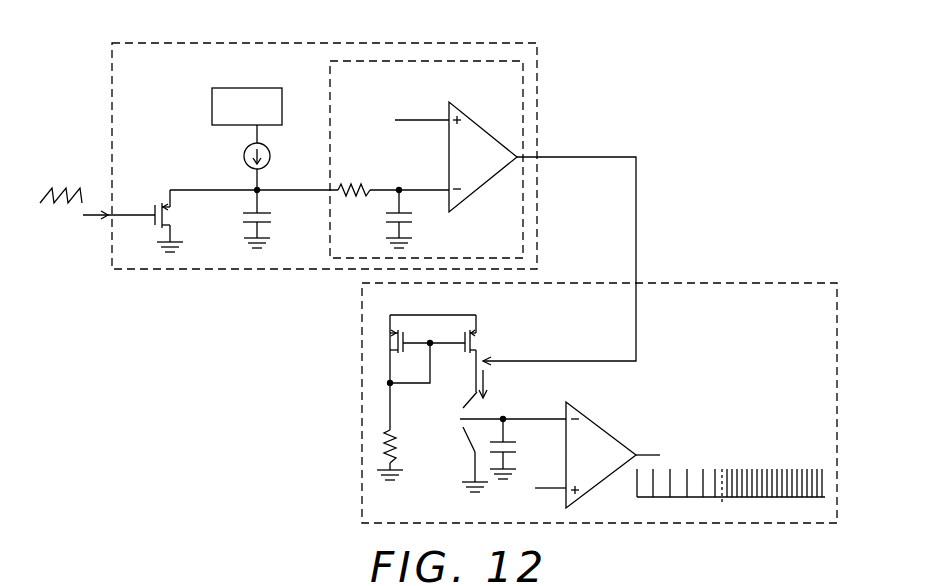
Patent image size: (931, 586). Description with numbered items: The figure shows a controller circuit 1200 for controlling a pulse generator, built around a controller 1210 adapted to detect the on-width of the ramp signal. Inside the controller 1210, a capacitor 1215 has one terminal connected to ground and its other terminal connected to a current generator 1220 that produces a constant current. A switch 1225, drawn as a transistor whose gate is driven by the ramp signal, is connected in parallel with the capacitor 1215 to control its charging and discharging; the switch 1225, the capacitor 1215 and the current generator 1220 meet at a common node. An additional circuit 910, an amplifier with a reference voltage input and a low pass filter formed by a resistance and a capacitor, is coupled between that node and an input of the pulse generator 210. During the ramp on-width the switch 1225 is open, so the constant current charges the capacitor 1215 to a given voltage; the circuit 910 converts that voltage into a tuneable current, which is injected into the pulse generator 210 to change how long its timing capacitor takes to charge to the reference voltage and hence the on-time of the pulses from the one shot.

The tunable on-time generation circuit 1200 is at (185, 417).
The controller 1210 is at (537, 78).
The controller circuit 910 is at (441, 61).
The current generator 1220 is at (255, 88).
The switch 1225 is at (161, 207).
The capacitor C4 1215 is at (275, 226).
The pulse generator 210 is at (763, 283).